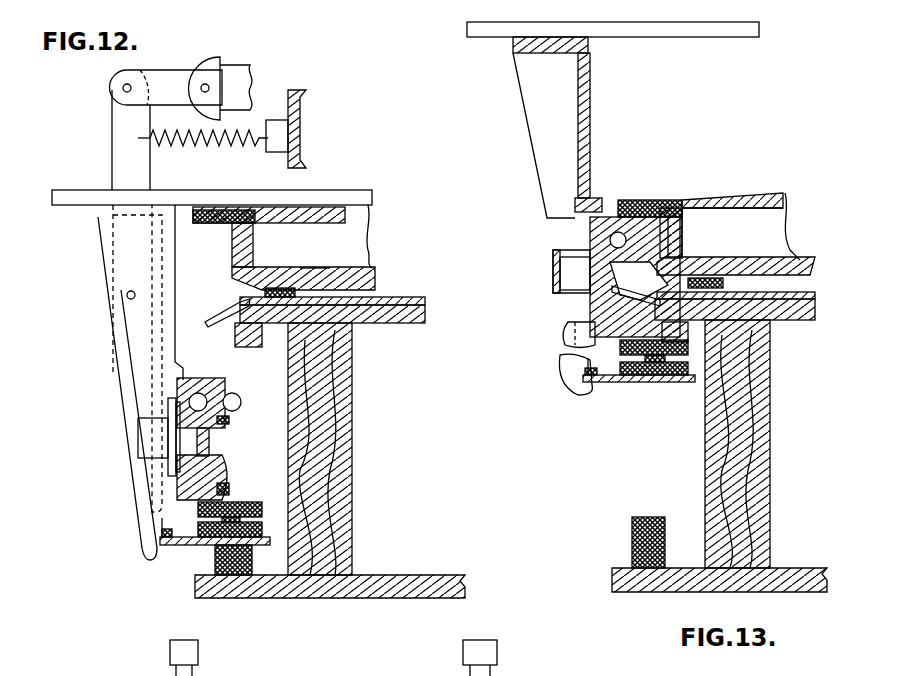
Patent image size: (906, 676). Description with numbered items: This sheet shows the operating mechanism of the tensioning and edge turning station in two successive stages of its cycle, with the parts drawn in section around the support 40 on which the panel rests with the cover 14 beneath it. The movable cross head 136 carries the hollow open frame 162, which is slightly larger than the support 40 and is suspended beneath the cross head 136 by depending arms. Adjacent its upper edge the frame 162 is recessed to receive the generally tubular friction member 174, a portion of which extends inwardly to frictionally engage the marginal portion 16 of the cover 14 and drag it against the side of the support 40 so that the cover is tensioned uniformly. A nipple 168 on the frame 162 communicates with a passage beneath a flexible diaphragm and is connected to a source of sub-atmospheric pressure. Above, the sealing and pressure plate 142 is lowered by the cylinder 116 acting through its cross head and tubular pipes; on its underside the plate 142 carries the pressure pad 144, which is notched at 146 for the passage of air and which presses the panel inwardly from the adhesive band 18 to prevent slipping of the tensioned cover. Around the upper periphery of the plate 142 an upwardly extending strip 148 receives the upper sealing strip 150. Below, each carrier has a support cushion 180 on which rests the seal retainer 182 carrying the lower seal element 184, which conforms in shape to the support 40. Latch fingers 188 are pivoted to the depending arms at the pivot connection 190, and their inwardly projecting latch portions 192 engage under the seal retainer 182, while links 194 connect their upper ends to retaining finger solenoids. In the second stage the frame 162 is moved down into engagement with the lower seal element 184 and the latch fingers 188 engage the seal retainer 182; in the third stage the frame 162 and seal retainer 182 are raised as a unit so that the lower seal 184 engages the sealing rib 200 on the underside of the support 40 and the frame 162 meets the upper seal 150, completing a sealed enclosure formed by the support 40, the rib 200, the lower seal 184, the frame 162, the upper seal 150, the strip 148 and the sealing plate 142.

In FIG. 12, the cover 14 is at (427, 301).
In FIG. 13, the cover 14 is at (736, 295).
In FIG. 13, the marginal portion 16 is at (683, 210).
In FIG. 12, the adhesive band 18 is at (242, 294).
In FIG. 13, the adhesive band 18 is at (636, 296).
In FIG. 12, the support 40 is at (405, 324).
In FIG. 13, the support 40 is at (818, 298).
In FIG. 12, the cylinder 116 is at (505, 675).
In FIG. 12, the cross head 136 is at (343, 190).
In FIG. 13, the cross head 136 is at (735, 30).
In FIG. 12, the plate 142 is at (370, 280).
In FIG. 13, the plate 142 is at (795, 250).
In FIG. 12, the pressure pad 144 is at (280, 288).
In FIG. 13, the pressure pad 144 is at (742, 276).
In FIG. 12, the notch 146 is at (317, 288).
In FIG. 13, the strip 148 is at (668, 255).
In FIG. 13, the upper sealing strip 150 is at (700, 205).
In FIG. 13, the hollow open frame 162 is at (593, 322).
In FIG. 12, the nipple 168 is at (140, 455).
In FIG. 13, the nipple 168 is at (553, 273).
In FIG. 12, the tubular friction member 174 is at (236, 393).
In FIG. 13, the tubular friction member 174 is at (645, 203).
In FIG. 12, the support cushion 180 is at (252, 562).
In FIG. 13, the support cushion 180 is at (632, 542).
In FIG. 12, the seal retainer 182 is at (190, 546).
In FIG. 13, the seal retainer 182 is at (643, 383).
In FIG. 12, the lower seal element 184 is at (237, 502).
In FIG. 13, the lower seal element 184 is at (690, 368).
In FIG. 12, the latch fingers 188 is at (132, 433).
In FIG. 12, the pivot connection 190 is at (127, 297).
In FIG. 13, the pivot connection 190 is at (557, 127).
In FIG. 12, the latch portions 192 is at (168, 545).
In FIG. 13, the latch portions 192 is at (578, 396).
In FIG. 12, the links 194 is at (173, 82).
In FIG. 12, the sealing rib 200 is at (235, 332).
In FIG. 13, the sealing rib 200 is at (690, 330).